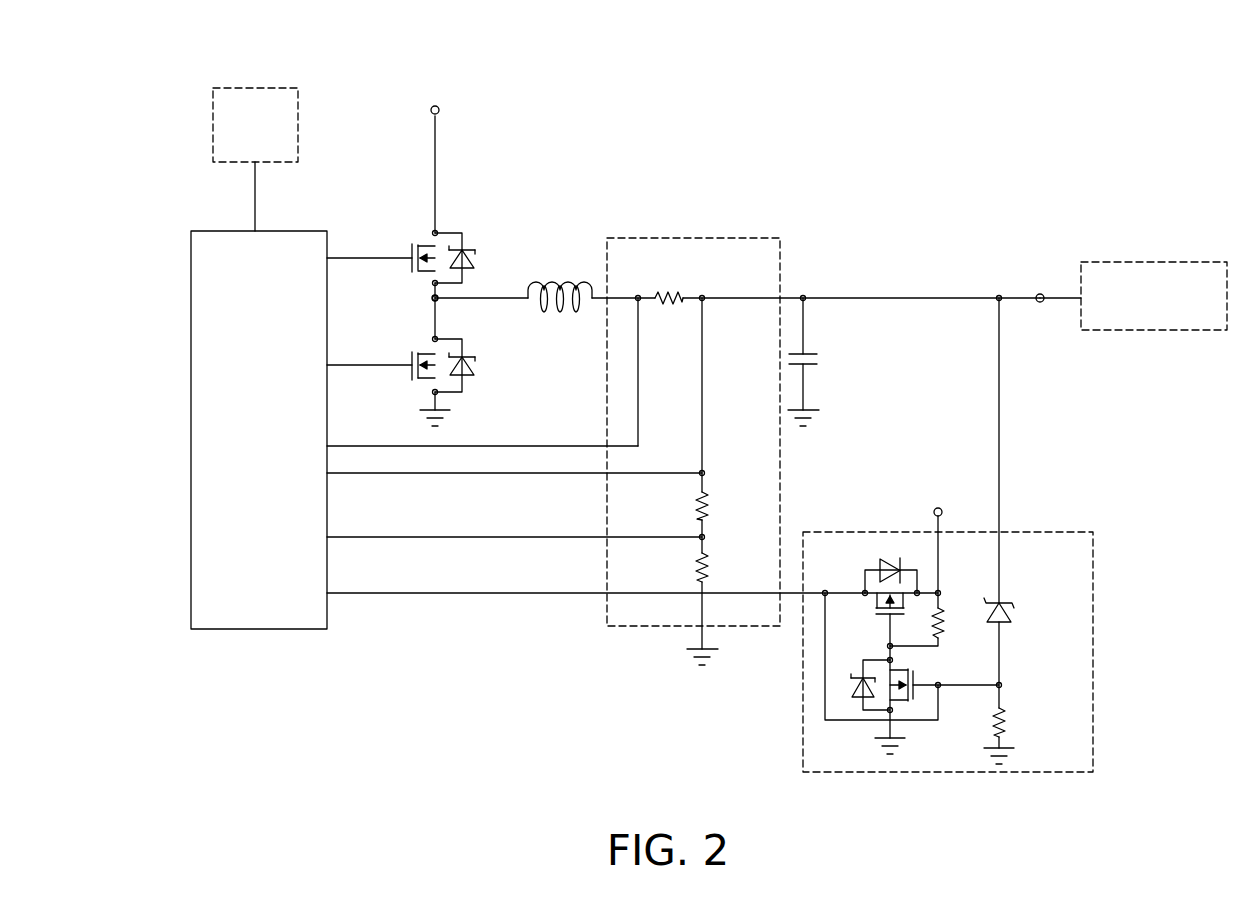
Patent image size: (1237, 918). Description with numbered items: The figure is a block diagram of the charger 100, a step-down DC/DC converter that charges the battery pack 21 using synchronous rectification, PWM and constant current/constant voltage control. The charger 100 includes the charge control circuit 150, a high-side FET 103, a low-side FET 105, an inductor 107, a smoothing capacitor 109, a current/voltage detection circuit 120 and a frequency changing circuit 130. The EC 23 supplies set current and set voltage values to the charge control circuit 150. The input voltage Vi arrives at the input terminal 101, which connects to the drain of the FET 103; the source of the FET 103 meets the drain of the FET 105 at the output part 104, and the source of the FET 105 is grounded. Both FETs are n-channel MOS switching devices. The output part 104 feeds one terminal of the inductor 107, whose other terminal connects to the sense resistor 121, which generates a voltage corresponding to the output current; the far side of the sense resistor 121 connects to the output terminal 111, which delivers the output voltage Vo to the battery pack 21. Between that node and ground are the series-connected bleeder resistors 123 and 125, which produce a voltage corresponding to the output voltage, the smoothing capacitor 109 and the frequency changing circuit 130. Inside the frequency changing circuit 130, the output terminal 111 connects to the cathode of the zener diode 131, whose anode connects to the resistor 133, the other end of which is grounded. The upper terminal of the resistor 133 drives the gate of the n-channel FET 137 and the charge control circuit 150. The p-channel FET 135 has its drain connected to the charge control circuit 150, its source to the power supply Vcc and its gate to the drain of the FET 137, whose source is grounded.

The charger 100 is at (381, 131).
The EC 23 is at (258, 88).
The charge control circuit 150 is at (293, 231).
The input terminal 101 is at (436, 106).
The high-side FET 103 is at (462, 244).
The output part 104 is at (435, 298).
The low-side FET 105 is at (462, 349).
The inductor 107 is at (568, 281).
The smoothing capacitor 109 is at (817, 359).
The output terminal 111 is at (1043, 293).
The battery pack 21 is at (1158, 262).
The current/voltage detection circuit 120 is at (735, 237).
The sense resistor 121 is at (668, 296).
The bleeder resistor 123 is at (708, 506).
The bleeder resistor 125 is at (708, 568).
The frequency changing circuit 130 is at (1030, 532).
The zener diode 131 is at (1013, 604).
The resistor 133 is at (1010, 719).
The p-channel MOS type FET 135 is at (865, 575).
The n-channel MOS type FET 137 is at (870, 660).